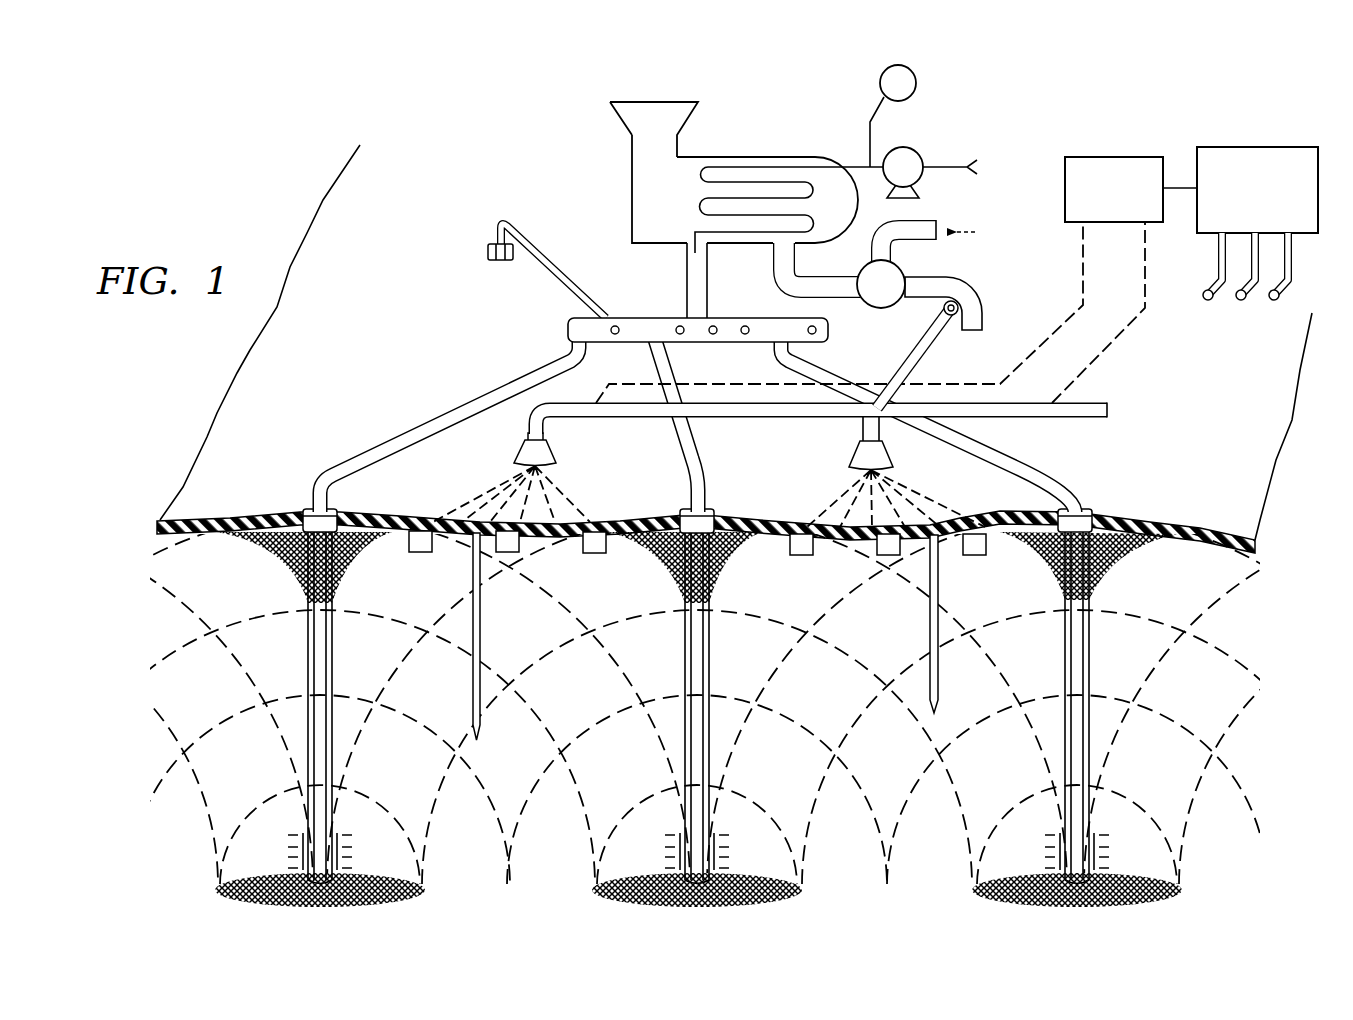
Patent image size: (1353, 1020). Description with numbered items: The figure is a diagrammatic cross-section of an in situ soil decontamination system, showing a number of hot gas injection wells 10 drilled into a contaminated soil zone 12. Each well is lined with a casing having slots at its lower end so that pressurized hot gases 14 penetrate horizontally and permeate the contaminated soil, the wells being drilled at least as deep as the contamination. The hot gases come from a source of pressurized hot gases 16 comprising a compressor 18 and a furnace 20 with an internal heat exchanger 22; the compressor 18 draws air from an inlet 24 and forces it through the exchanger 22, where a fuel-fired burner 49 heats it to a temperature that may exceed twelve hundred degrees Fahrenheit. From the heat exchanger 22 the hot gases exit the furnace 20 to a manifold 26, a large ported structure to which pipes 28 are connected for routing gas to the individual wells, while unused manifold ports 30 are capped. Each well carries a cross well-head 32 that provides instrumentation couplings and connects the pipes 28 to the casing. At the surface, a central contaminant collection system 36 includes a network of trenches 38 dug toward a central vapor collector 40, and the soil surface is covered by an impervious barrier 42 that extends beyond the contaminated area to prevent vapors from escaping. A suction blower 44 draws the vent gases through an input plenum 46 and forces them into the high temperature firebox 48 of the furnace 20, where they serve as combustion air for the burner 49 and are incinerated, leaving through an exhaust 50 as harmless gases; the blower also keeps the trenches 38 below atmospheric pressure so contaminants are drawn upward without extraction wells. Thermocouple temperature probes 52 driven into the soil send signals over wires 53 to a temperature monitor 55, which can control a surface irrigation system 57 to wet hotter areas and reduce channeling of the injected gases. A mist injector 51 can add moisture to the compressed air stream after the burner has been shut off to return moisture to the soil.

The hot gas injection well 10 is at (306, 646).
The contaminated soil zone 12 is at (873, 764).
The pressurized hot gases 14 is at (286, 854).
The source of pressurized hot gases 16 is at (819, 114).
The compressor 18 is at (912, 146).
The furnace 20 is at (760, 156).
The heat exchanger 22 is at (700, 180).
The inlet 24 is at (982, 170).
The manifold 26 is at (630, 316).
The pipes 28 is at (447, 412).
The manifold ports 30 is at (686, 342).
The cross well-head 32 is at (340, 507).
The contaminant collection system 36 is at (576, 447).
The trenches 38 is at (420, 555).
The central vapor collector 40 is at (508, 447).
The impervious barrier 42 is at (639, 514).
The suction blower 44 is at (978, 288).
The input plenum 46 is at (952, 336).
The firebox 48 is at (836, 232).
The fuel-fired burner 49 is at (878, 309).
The exhaust 50 is at (642, 100).
The mist injector 51 is at (918, 79).
The thermocouple temperature probes 52 is at (483, 724).
The wires 53 is at (1040, 348).
The temperature monitor 55 is at (1127, 156).
The surface irrigation system 57 is at (1257, 146).